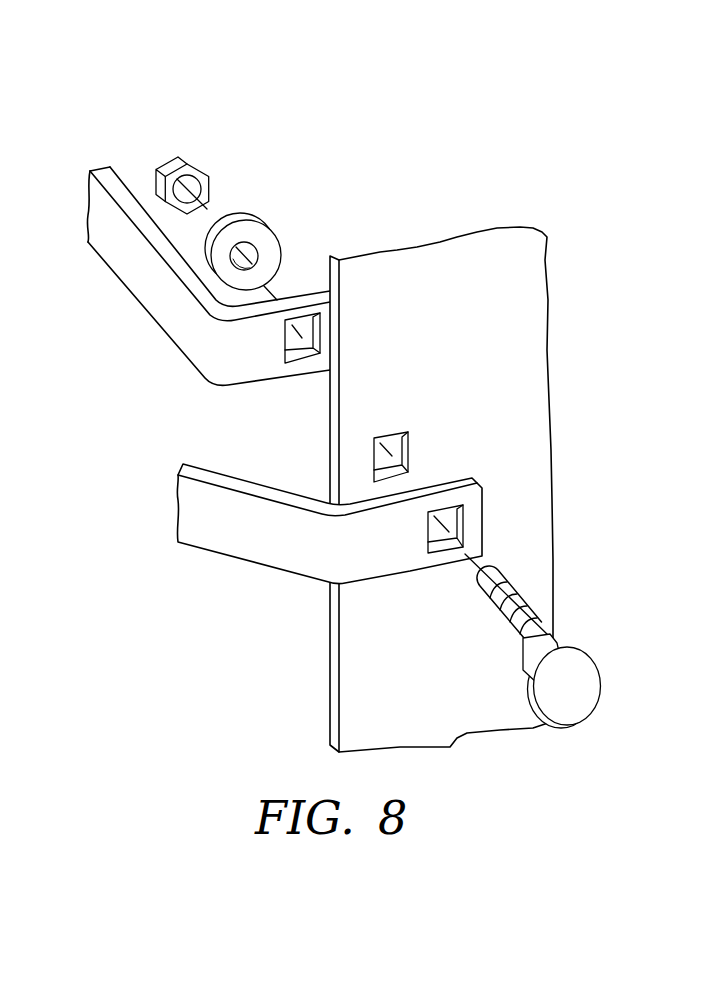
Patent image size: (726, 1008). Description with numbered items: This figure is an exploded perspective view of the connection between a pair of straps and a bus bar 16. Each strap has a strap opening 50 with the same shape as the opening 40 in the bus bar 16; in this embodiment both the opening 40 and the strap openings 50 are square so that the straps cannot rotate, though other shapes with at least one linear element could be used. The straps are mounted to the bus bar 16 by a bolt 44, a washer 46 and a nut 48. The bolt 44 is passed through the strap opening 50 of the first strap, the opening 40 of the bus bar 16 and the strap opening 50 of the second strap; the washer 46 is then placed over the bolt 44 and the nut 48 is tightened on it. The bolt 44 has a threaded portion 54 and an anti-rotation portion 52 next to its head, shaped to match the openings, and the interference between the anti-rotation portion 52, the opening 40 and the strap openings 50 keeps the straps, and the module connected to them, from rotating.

The bus bar 16 is at (442, 253).
The opening 40 is at (408, 443).
The bolt 44 is at (579, 639).
The washer 46 is at (262, 228).
The nut 48 is at (172, 157).
The strap opening 50 is at (463, 522).
The anti-rotation portion 52 is at (550, 634).
The threaded portion 54 is at (518, 602).